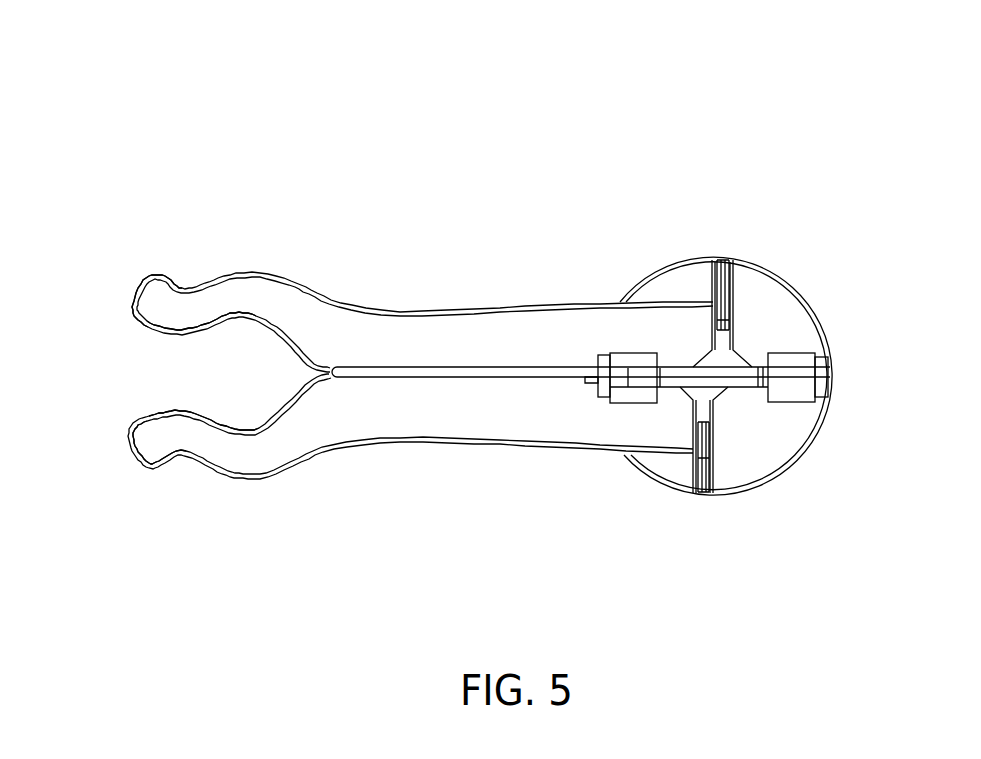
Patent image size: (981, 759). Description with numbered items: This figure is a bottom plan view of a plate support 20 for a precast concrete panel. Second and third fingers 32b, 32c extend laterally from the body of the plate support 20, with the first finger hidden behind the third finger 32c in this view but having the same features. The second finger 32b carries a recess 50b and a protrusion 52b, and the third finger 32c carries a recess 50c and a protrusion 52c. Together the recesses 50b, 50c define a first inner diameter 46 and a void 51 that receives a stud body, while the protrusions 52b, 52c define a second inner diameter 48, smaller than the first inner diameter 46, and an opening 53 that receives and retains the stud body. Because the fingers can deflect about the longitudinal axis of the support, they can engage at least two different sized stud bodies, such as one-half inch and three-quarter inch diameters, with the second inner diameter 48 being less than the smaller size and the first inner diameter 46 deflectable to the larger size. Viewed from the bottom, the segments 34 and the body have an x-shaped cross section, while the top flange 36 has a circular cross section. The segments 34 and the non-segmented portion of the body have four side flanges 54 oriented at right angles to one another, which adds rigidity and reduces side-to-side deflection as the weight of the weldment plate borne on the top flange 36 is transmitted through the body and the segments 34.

The plate support 20 is at (531, 101).
The second finger 32b is at (428, 340).
The third finger 32c is at (430, 400).
The segments 34 is at (832, 370).
The top flange 36 is at (778, 308).
The first inner diameter 46 is at (247, 373).
The second inner diameter 48 is at (177, 375).
The recess 50b is at (243, 420).
The recess 50c is at (243, 432).
The void 51 is at (272, 371).
The protrusion 52b is at (183, 335).
The protrusion 52c is at (182, 348).
The opening 53 is at (165, 382).
The side flanges 54 is at (723, 307).